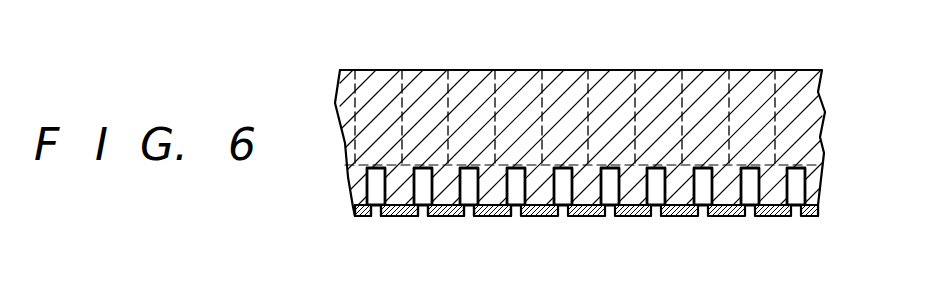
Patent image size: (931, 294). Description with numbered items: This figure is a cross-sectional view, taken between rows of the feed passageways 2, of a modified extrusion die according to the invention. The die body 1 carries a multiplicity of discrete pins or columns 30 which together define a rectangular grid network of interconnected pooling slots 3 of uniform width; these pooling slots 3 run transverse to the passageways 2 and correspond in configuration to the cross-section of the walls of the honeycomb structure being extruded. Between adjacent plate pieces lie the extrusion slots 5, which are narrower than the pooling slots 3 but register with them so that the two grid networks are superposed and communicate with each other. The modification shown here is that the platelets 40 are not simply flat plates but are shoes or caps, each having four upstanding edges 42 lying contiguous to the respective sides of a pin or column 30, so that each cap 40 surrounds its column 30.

The die body 1 is at (829, 151).
The passageways 2 is at (757, 88).
The pooling slots 3 is at (697, 213).
The pins or columns 30 is at (762, 197).
The upstanding edges 42 is at (390, 215).
The platelets 40 is at (449, 215).
The extrusion slots 5 is at (513, 213).